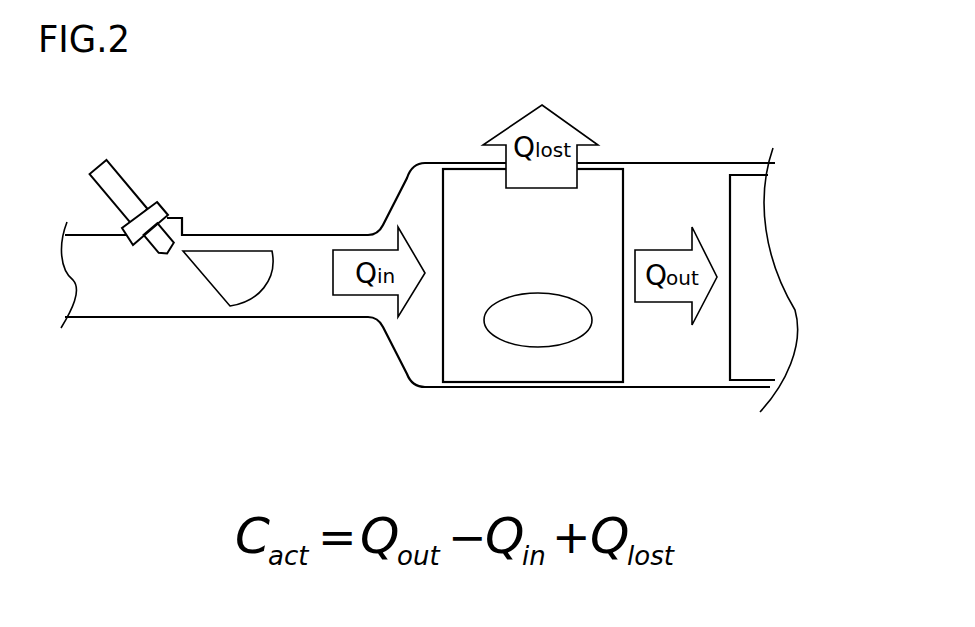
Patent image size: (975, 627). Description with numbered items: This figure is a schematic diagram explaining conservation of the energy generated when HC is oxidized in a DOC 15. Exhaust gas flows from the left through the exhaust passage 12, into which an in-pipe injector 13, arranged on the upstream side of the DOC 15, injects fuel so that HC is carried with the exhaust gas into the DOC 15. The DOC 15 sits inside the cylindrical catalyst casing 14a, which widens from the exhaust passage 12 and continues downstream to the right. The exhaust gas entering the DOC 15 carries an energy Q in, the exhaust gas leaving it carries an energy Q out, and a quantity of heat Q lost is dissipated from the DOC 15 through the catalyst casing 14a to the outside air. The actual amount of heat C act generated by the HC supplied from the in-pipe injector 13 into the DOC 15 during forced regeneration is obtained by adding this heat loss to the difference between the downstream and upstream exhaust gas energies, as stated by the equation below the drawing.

The exhaust passage 12 is at (138, 318).
The in-pipe injector 13 is at (130, 188).
The catalyst casing 14a is at (673, 161).
The DOC 15 is at (498, 367).